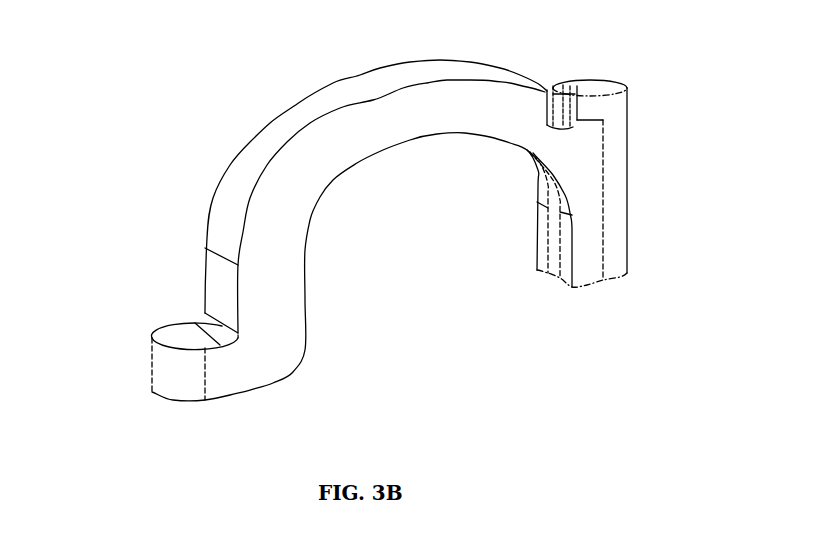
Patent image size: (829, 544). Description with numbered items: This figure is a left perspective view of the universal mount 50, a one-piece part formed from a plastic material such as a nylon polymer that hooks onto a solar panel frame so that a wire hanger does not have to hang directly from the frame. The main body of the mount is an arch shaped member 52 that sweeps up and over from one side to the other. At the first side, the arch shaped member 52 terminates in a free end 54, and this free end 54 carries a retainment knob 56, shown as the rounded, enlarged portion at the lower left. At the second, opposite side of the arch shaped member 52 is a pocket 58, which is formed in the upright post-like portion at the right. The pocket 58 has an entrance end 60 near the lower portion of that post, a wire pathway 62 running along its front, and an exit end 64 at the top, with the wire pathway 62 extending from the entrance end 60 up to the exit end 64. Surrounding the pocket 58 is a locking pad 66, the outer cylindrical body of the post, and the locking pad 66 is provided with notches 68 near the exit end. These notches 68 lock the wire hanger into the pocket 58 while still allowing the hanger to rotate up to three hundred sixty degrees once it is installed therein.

The universal mount 50 is at (268, 122).
The arch shaped member 52 is at (381, 66).
The free end 54 is at (228, 377).
The retainment knob 56 is at (163, 368).
The pocket 58 is at (552, 85).
The entrance end 60 is at (553, 276).
The wire pathway 62 is at (558, 231).
The exit end 64 is at (596, 87).
The locking pad 66 is at (620, 192).
The notches 68 is at (577, 89).